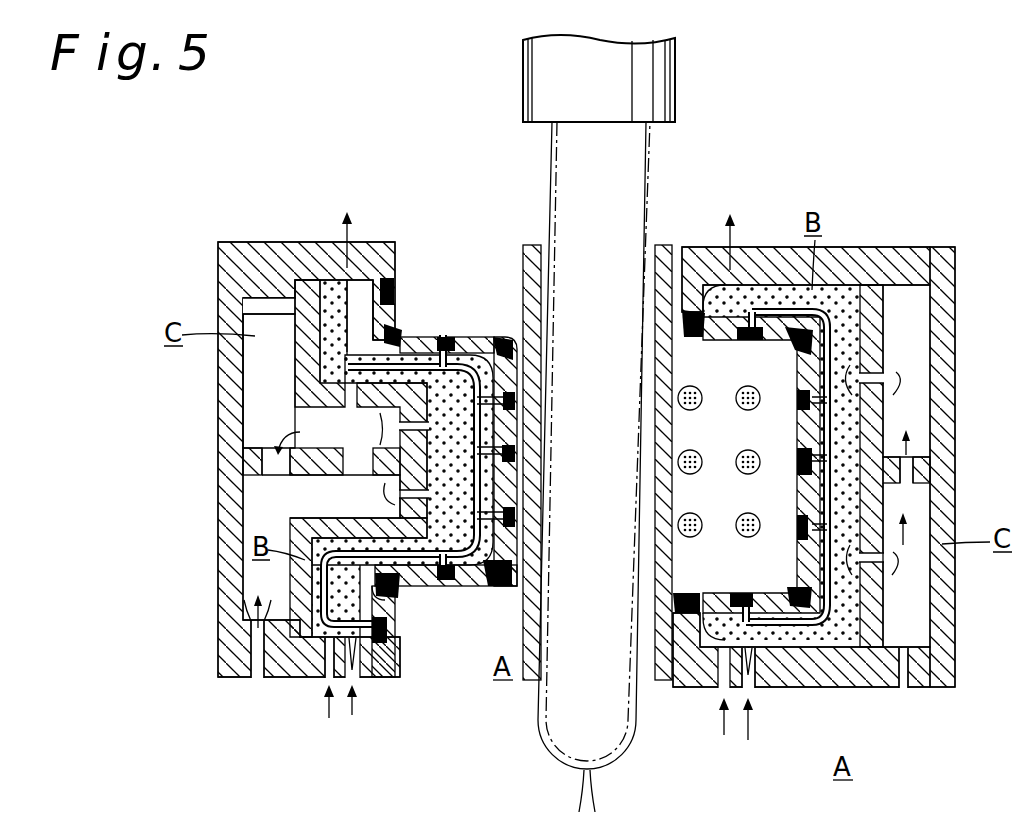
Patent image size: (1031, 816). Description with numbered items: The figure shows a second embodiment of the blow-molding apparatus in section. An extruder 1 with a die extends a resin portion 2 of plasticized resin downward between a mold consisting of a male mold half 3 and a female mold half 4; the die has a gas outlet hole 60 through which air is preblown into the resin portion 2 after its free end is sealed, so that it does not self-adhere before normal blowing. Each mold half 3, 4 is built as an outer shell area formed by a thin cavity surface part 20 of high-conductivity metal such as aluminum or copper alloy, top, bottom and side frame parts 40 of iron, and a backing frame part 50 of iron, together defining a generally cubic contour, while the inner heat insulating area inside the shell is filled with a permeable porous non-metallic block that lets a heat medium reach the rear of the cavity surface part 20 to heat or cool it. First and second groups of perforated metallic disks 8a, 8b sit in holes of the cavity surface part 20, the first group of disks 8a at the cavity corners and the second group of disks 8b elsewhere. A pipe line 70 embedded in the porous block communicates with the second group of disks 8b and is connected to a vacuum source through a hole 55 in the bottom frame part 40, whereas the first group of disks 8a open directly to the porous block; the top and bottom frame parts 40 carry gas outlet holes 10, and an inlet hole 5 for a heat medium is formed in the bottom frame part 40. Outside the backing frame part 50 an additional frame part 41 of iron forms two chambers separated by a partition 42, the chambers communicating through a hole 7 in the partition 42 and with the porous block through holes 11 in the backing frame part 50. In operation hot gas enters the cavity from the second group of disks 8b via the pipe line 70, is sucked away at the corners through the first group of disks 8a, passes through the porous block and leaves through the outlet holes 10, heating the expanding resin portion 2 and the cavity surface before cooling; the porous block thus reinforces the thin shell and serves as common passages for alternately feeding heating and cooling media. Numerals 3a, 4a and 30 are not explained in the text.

The extruder 1 is at (654, 99).
The resin portion 2 is at (615, 763).
The male mold half 3 is at (247, 222).
The inner sleeve of left block 3a is at (496, 338).
The female mold half 4 is at (956, 244).
The porous body with holes 4a is at (790, 442).
The inlet hole 5 is at (258, 670).
The hole 7 is at (275, 448).
The first group of perforated metallic disks 8a is at (394, 328).
The second group of perforated metallic disks 8b is at (389, 283).
The gas outlet holes 10 is at (350, 263).
The holes 11 is at (399, 426).
The cavity surface part 20 is at (388, 655).
The inner heater block 30 is at (314, 283).
The frame parts 40 is at (272, 242).
The additional frame part 41 is at (956, 468).
The partition 42 is at (323, 477).
The backing frame part 50 is at (300, 350).
The hole 55 is at (329, 680).
The gas outlet hole 60 is at (668, 246).
The pipe line 70 is at (243, 305).